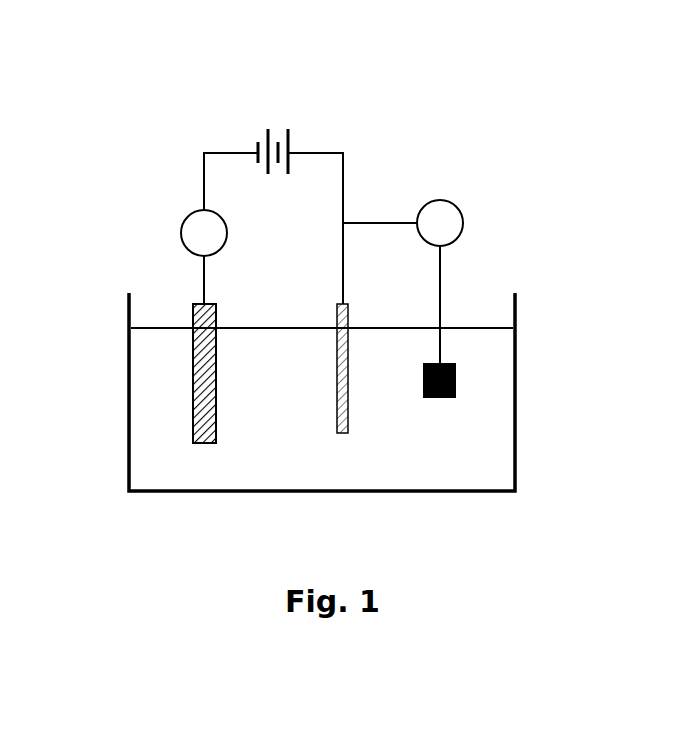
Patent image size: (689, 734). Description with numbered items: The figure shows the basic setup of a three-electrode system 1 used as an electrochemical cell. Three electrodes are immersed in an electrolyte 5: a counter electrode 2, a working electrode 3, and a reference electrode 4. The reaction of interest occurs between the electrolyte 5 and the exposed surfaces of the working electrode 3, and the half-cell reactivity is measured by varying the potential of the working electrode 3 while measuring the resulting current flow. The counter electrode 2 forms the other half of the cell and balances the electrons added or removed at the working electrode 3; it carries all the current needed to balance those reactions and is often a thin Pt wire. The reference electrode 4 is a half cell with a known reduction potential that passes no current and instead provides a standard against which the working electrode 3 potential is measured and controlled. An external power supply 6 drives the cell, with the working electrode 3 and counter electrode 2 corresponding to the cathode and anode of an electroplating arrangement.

The three-electrode system 1 is at (108, 94).
The counter electrode 2 is at (192, 398).
The working electrode 3 is at (350, 411).
The reference electrode 4 is at (460, 383).
The electrolyte 5 is at (148, 362).
The external power supply 6 is at (278, 122).